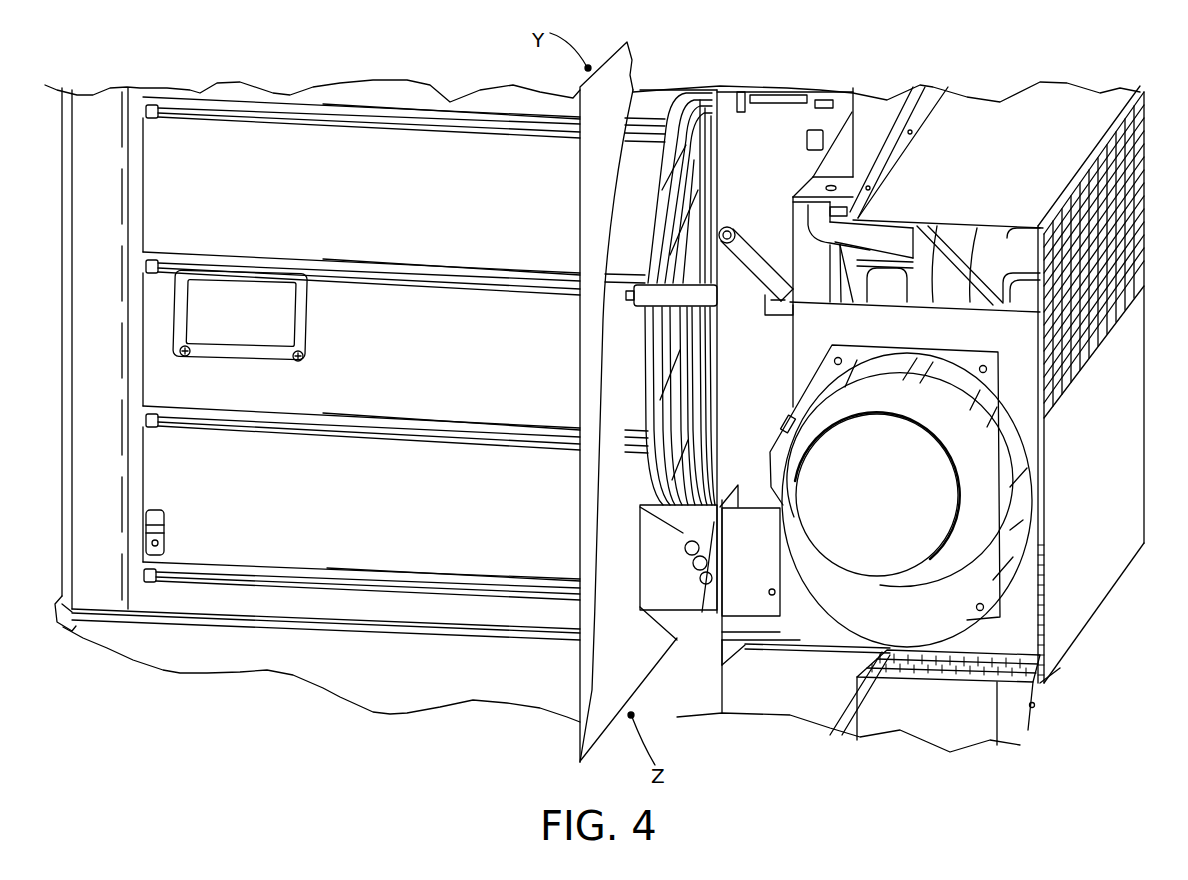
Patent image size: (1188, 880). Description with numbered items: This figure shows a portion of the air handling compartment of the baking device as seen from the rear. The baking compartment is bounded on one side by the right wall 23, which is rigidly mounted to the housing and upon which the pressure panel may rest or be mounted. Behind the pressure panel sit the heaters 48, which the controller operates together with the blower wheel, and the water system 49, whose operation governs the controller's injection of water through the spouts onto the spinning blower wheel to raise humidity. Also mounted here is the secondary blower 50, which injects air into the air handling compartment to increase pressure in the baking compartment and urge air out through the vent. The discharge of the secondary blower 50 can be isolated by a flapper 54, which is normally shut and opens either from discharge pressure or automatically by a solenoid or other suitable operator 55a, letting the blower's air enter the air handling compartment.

The right wall 23 is at (410, 552).
The heaters 48 is at (672, 165).
The water system 49 is at (748, 252).
The secondary blower 50 is at (873, 613).
The flapper 54 is at (683, 625).
The solenoid or other suitable operator 55a is at (683, 533).